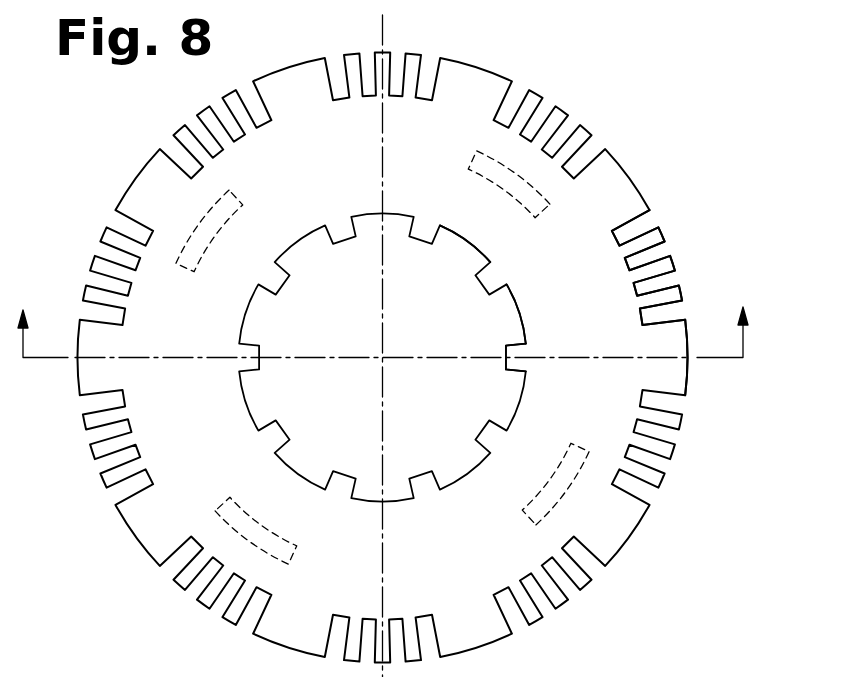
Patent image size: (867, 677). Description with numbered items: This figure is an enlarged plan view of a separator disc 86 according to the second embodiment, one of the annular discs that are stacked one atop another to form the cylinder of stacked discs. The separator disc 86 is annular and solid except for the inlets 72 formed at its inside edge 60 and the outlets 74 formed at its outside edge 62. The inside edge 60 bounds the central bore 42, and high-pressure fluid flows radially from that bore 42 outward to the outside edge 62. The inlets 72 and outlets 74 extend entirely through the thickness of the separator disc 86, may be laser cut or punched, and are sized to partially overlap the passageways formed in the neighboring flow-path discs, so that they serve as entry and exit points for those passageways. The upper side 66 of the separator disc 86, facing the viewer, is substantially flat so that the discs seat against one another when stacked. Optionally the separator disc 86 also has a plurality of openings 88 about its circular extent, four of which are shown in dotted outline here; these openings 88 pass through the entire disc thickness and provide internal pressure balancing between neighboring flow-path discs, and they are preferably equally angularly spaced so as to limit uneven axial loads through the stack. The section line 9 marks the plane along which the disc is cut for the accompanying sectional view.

The section line 9- 9 is at (382, 307).
The bore 42 is at (346, 412).
The inside edge 60 is at (503, 364).
The outside edge 62 is at (693, 371).
The upper side 66 is at (435, 358).
The inlets 72 is at (520, 320).
The outlets 74 is at (680, 308).
The separator disc 86 is at (430, 358).
The openings 88 is at (550, 197).